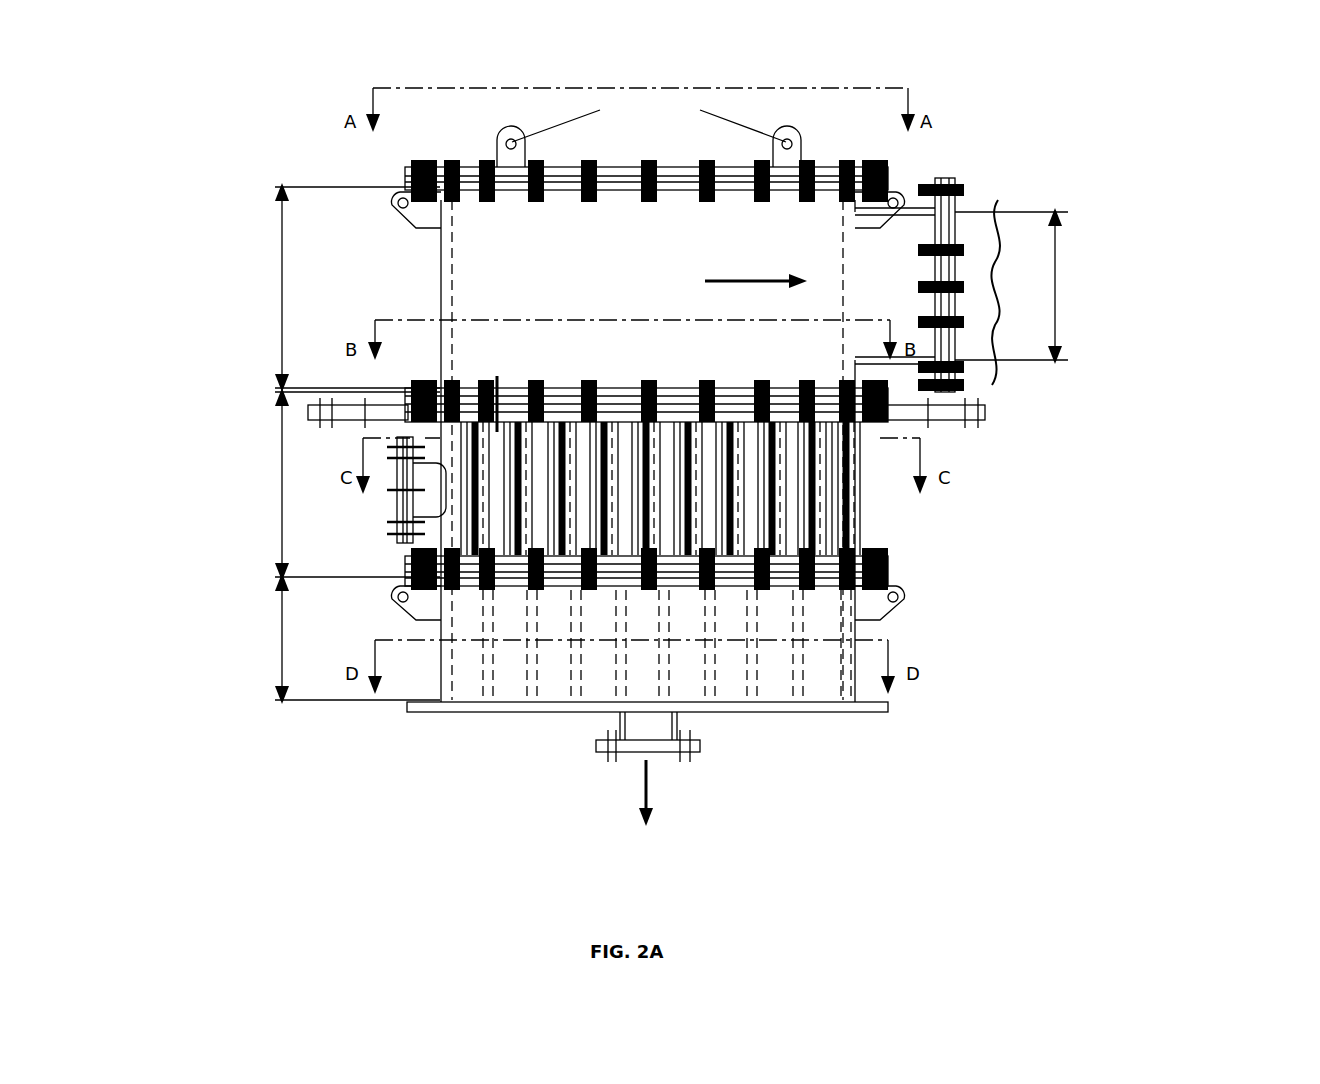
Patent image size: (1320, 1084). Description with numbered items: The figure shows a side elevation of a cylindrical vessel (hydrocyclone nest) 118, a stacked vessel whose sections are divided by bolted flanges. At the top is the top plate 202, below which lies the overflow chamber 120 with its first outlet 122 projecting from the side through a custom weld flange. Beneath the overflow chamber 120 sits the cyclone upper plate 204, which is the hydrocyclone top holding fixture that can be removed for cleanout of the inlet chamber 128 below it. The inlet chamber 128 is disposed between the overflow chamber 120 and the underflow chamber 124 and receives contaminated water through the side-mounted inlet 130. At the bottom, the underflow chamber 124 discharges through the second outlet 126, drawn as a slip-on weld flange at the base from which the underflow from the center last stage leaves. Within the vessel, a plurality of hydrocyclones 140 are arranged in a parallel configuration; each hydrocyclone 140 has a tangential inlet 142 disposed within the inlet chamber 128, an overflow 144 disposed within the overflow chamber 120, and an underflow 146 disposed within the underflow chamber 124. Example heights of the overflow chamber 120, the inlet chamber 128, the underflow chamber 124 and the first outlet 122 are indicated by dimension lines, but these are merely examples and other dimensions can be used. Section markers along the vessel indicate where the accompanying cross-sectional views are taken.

The cylindrical vessel (hydrocyclone nest) 118 is at (1104, 68).
The top plate 202 is at (478, 165).
The cyclone upper plate 204 is at (890, 400).
The tangential inlet 142 is at (476, 388).
The overflow 144 is at (498, 388).
The hydrocyclone 140 is at (790, 485).
The underflow 146 is at (484, 583).
The inlet 130 is at (402, 494).
The second outlet 126 is at (639, 812).
The overflow chamber 120 is at (310, 287).
The first outlet 122 is at (1057, 286).
The underflow chamber 124 is at (308, 638).
The inlet chamber 128 is at (280, 484).